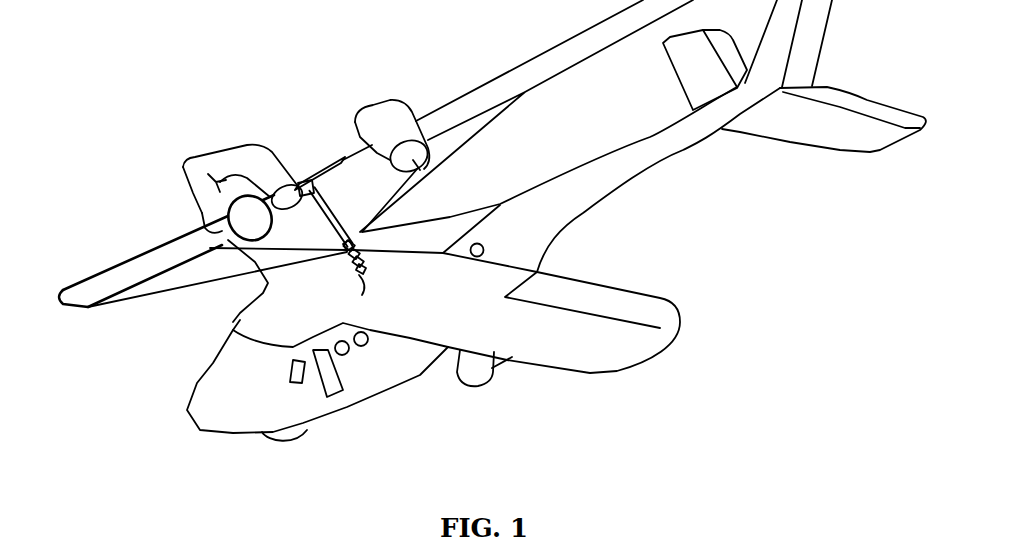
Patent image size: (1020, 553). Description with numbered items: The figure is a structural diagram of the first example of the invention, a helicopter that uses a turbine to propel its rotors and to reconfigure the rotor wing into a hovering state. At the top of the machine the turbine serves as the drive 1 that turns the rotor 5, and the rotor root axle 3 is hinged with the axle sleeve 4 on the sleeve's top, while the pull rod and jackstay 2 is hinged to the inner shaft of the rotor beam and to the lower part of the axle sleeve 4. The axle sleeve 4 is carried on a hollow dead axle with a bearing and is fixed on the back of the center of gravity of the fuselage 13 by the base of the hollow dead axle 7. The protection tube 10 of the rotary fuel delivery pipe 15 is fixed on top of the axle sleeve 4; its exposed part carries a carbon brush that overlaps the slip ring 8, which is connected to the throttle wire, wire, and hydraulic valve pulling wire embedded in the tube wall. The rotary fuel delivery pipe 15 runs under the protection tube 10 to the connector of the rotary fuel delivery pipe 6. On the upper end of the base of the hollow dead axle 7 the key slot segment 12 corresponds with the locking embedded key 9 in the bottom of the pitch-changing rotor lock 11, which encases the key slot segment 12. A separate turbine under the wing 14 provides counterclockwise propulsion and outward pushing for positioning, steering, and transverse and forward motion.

The drive 1 is at (215, 225).
The pull rod and jackstay 2 is at (217, 270).
The rotor root axle 3 is at (327, 167).
The axle sleeve 4 is at (350, 228).
The rotor 5 is at (535, 72).
The connector of the rotary fuel delivery pipe 6 is at (362, 276).
The base of the hollow dead axle 7 is at (412, 222).
The slip ring 8 is at (357, 262).
The locking embedded key 9 is at (350, 257).
The protection tube 10 is at (363, 267).
The pitch-changing rotor lock 11 is at (350, 250).
The key slot segment 12 is at (343, 250).
The fuselage 13 is at (380, 370).
The wing 14 is at (607, 350).
The rotary fuel delivery pipe 15 is at (363, 270).